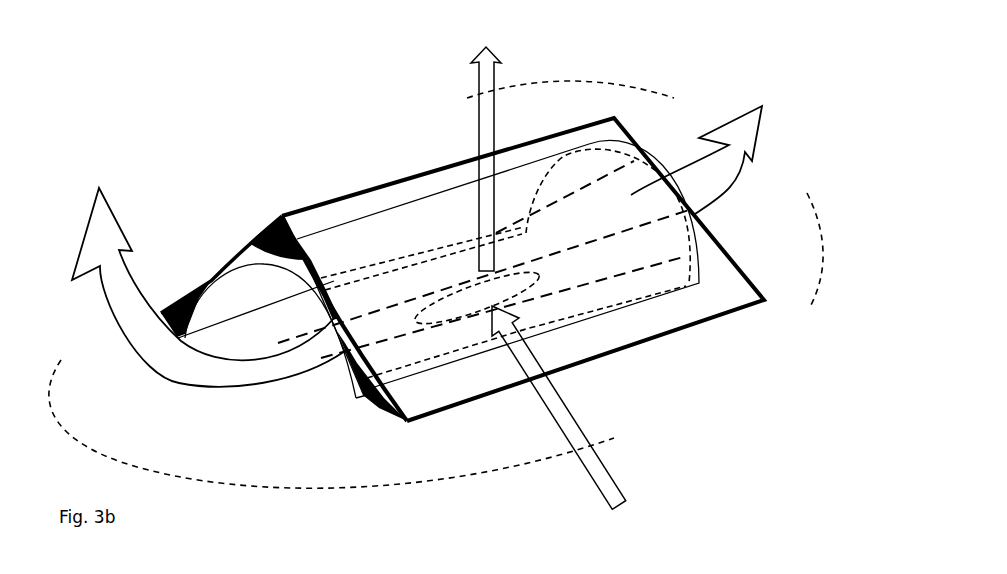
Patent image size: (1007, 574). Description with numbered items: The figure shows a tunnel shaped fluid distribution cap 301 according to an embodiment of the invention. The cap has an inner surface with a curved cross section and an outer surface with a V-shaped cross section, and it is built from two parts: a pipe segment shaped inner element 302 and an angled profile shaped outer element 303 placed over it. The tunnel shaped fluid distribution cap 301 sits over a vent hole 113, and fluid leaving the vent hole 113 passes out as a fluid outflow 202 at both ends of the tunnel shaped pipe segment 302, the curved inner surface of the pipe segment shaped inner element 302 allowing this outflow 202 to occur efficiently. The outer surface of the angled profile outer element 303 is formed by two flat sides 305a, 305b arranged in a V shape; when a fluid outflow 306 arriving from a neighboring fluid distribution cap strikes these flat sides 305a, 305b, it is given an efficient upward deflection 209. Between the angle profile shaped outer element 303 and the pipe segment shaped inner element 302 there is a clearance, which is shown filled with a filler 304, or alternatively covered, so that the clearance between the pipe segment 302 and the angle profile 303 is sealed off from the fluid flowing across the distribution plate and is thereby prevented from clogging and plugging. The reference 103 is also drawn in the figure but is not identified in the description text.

The reference surface 103 is at (239, 444).
The aperture region 113 is at (454, 326).
The rotation direction arrows 202 is at (427, 234).
The normal direction arrow 209 is at (488, 141).
The flat plate portion 301 is at (332, 213).
The curved portion 302 is at (214, 277).
The rounded inner contour 303 is at (560, 148).
The upper edge wedge 304 is at (256, 223).
The lower edge 305a is at (411, 405).
The upper edge 305b is at (375, 205).
The incident direction arrow 306 is at (569, 407).